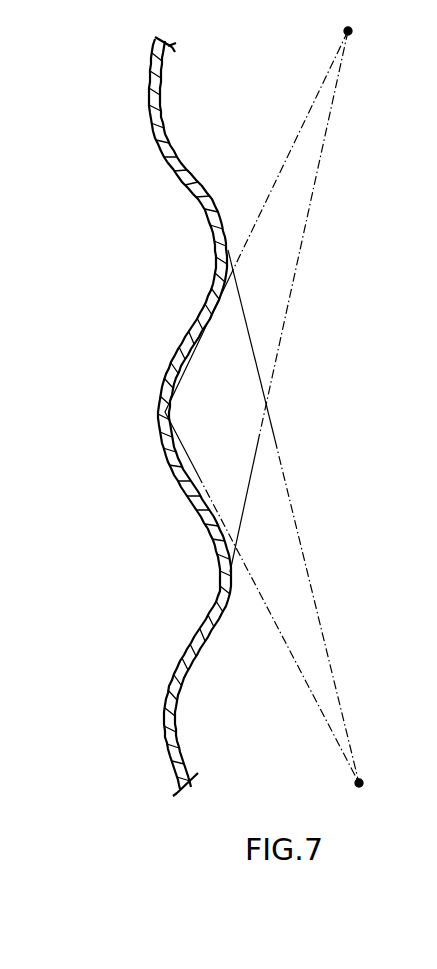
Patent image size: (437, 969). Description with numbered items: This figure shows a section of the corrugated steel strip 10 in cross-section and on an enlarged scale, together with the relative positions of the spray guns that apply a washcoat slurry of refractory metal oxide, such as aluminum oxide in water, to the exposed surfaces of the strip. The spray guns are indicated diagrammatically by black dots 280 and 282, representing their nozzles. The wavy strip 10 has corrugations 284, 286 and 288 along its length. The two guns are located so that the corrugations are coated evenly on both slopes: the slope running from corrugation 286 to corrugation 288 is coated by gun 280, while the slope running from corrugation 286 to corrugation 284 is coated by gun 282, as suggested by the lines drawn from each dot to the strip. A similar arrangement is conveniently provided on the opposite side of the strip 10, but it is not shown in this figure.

The corrugated steel strip 10 is at (182, 177).
The spray gun 280 is at (352, 33).
The spray gun 282 is at (363, 783).
The corrugation 284 is at (215, 230).
The corrugation 286 is at (158, 412).
The corrugation 288 is at (218, 565).